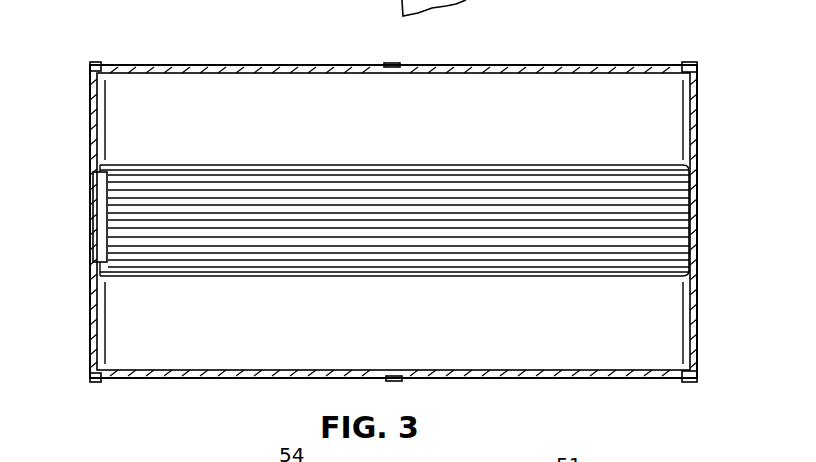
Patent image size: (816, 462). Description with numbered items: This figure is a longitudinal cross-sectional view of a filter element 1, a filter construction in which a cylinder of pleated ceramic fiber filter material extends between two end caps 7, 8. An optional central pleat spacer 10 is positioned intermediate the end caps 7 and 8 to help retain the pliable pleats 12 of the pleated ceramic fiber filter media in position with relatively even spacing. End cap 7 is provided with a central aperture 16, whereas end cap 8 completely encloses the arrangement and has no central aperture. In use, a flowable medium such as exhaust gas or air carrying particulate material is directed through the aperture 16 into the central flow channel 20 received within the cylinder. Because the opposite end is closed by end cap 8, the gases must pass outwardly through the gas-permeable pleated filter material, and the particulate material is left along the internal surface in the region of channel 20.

The filter element 1 is at (602, 38).
The end cap 7 is at (91, 114).
The end cap 8 is at (698, 128).
The central pleat spacer 10 is at (392, 63).
The pleats 12 is at (470, 90).
The central aperture 16 is at (99, 262).
The central flow channel 20 is at (593, 170).